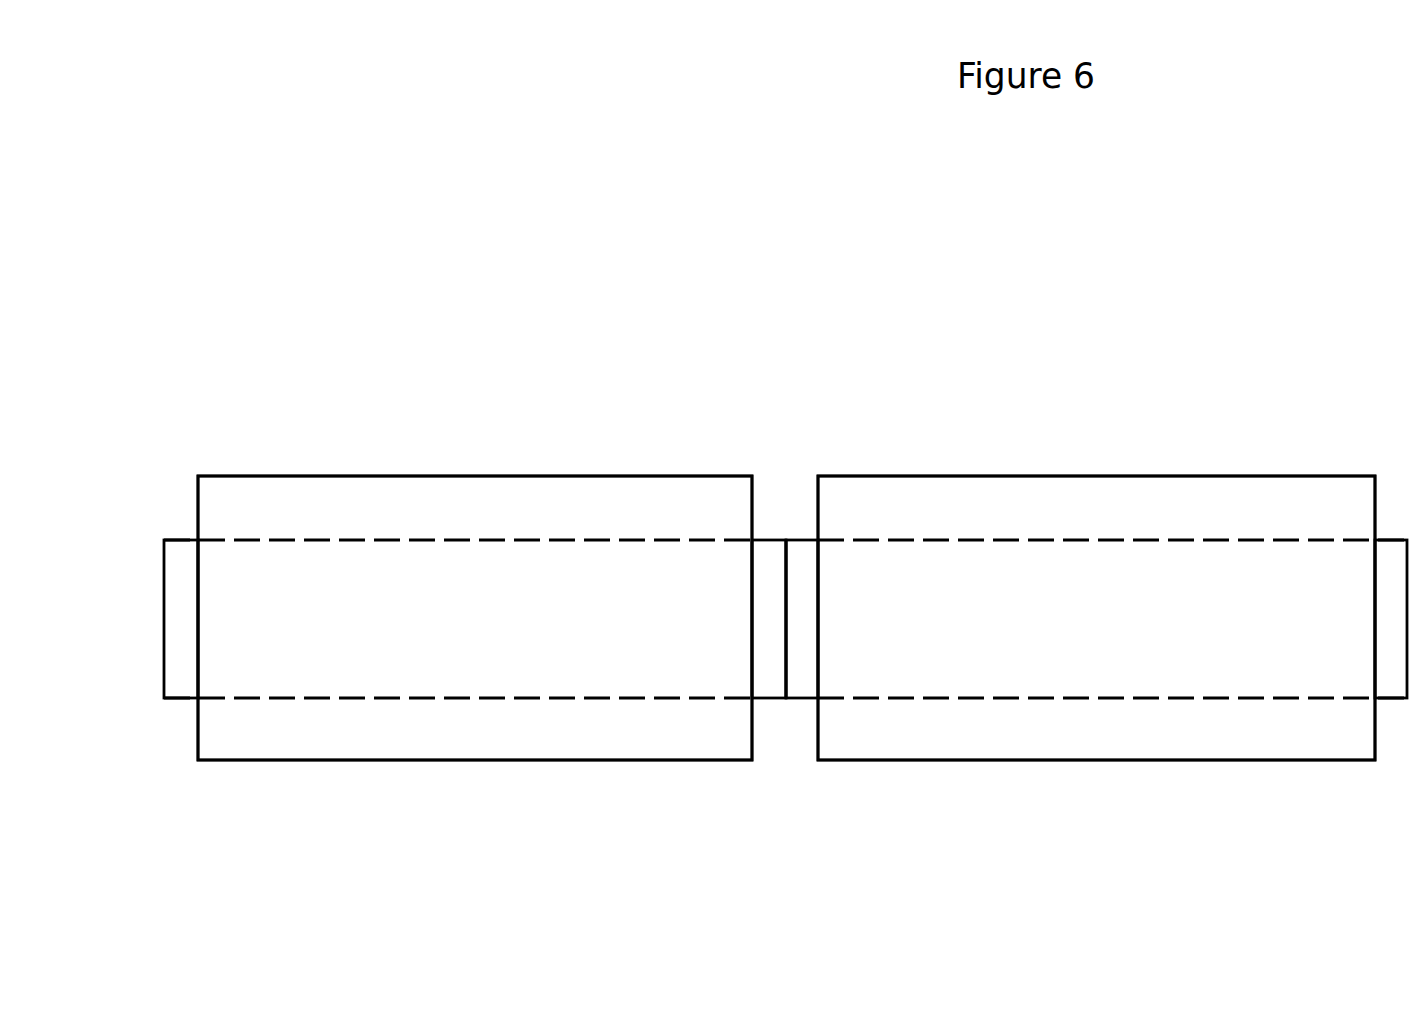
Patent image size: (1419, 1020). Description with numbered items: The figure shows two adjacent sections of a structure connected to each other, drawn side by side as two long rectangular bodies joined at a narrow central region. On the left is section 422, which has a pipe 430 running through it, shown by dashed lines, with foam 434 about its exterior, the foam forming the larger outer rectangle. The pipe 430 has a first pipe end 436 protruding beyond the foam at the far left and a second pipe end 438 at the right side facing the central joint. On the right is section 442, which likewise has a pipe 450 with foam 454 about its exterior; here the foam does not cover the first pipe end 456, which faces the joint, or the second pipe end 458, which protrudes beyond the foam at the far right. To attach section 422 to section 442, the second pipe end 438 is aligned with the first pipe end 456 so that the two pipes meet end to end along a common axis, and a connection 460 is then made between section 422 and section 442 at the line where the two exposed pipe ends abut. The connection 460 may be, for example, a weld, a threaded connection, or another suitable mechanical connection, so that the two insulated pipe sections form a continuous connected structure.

The section 422 is at (280, 410).
The pipe 430 is at (400, 540).
The foam 434 is at (710, 476).
The first pipe end 436 is at (164, 698).
The second pipe end 438 is at (773, 698).
The connection 460 is at (783, 560).
The first pipe end 456 is at (803, 698).
The section 442 is at (1005, 405).
The pipe 450 is at (1035, 540).
The foam 454 is at (1285, 476).
The second pipe end 458 is at (1393, 698).